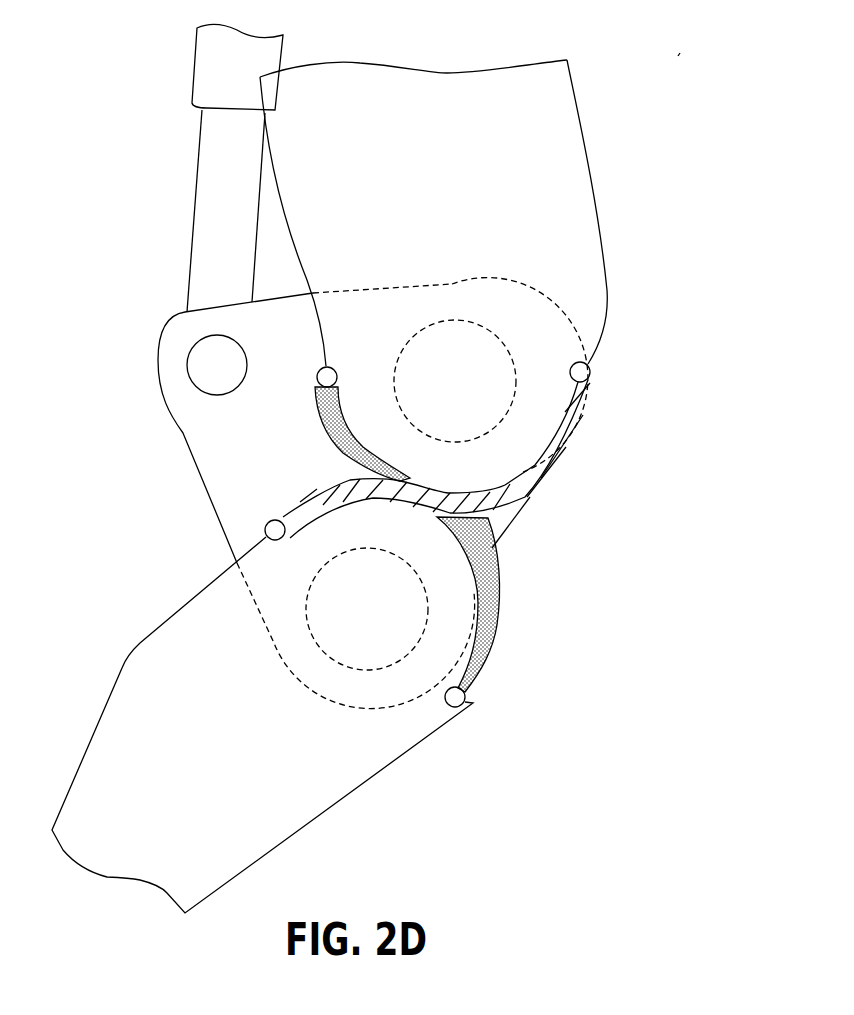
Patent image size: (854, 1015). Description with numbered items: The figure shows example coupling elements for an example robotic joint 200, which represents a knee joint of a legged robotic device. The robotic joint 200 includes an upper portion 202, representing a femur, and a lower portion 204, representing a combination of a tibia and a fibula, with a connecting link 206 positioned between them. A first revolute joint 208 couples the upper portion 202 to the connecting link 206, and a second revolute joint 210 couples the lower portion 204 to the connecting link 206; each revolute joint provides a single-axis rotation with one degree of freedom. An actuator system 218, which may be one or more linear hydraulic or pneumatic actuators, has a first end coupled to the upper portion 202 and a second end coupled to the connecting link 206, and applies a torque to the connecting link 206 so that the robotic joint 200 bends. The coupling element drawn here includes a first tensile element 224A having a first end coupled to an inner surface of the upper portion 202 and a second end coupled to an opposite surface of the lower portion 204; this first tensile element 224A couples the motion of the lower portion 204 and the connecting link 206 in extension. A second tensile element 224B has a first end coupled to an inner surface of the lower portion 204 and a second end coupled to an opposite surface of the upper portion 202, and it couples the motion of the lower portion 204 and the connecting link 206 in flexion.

The robotic joint 200 is at (678, 56).
The upper portion 202 is at (600, 228).
The lower portion 204 is at (168, 648).
The connecting link 206 is at (203, 458).
The first revolute joint 208 is at (518, 372).
The second revolute joint 210 is at (367, 672).
The actuator system 218 is at (197, 271).
The first tensile element 224A is at (493, 588).
The second tensile element 224B is at (538, 477).